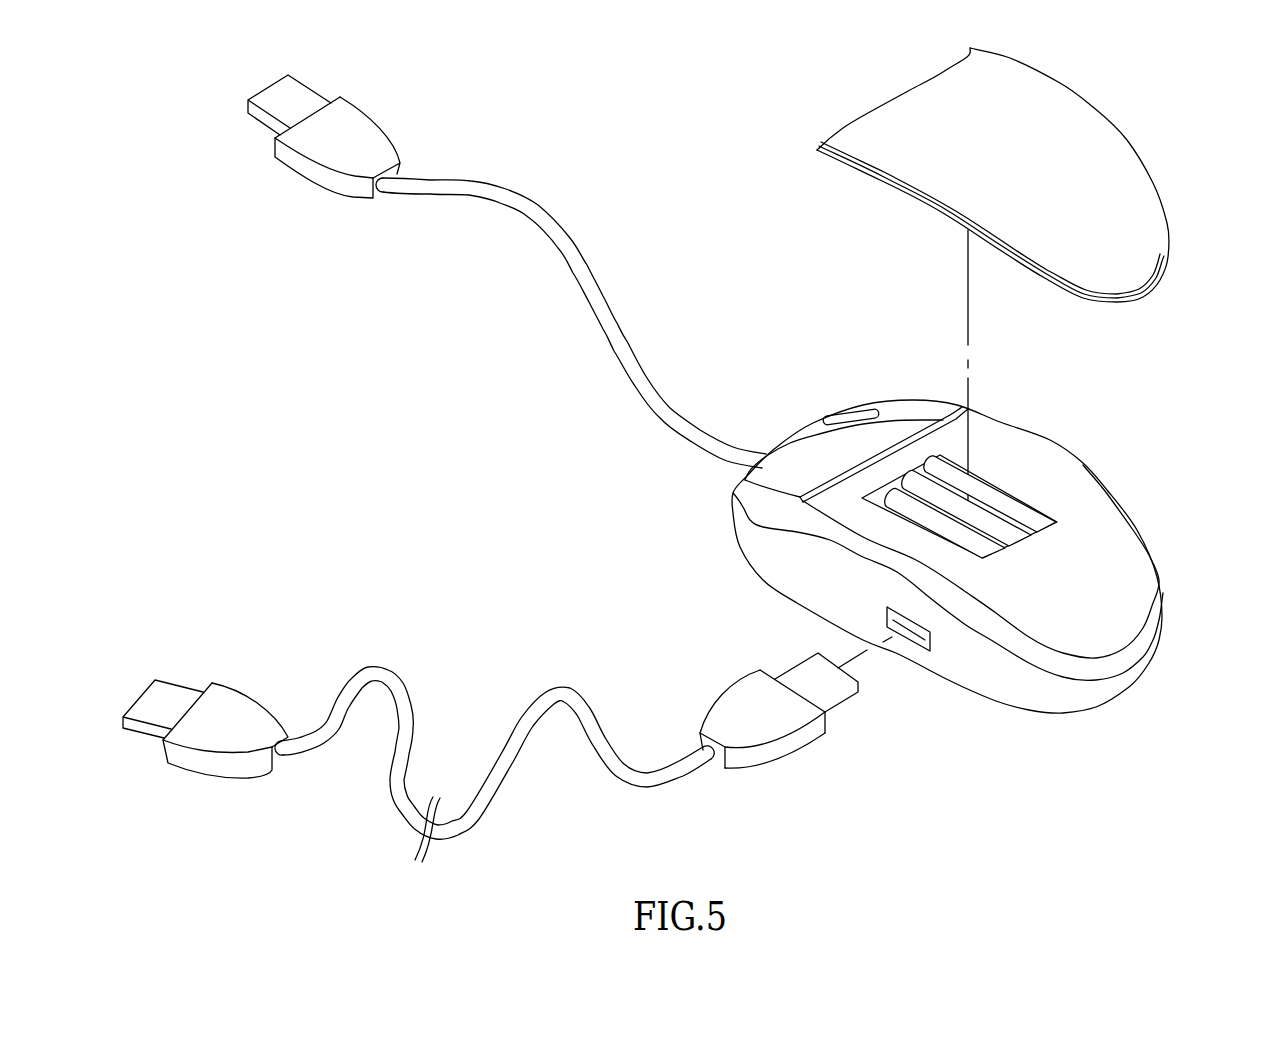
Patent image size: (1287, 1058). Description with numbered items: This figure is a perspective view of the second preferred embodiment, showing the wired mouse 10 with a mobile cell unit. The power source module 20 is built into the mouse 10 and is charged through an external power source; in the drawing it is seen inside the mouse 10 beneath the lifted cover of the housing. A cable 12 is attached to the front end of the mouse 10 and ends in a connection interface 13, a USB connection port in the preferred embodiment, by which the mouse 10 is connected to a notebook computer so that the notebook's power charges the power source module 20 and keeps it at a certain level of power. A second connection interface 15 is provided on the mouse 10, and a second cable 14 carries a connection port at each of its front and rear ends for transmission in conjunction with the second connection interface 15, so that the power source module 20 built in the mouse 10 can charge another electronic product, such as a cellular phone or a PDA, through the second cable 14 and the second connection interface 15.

The mouse 10 is at (1170, 550).
The cable 12 is at (595, 300).
The connection interface 13 is at (337, 185).
The second cable 14 is at (531, 712).
The second connection interface 15 is at (740, 703).
The power source module 20 is at (918, 487).